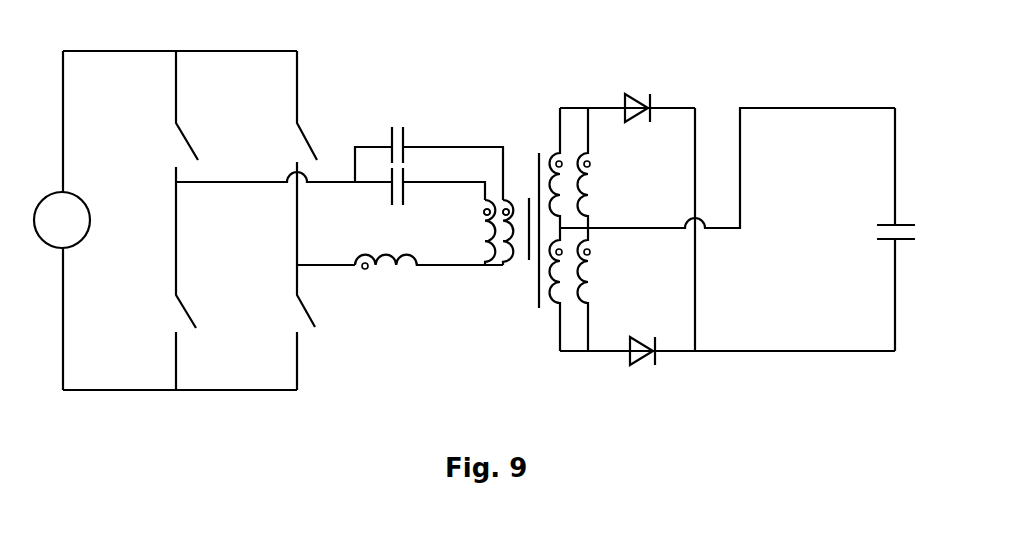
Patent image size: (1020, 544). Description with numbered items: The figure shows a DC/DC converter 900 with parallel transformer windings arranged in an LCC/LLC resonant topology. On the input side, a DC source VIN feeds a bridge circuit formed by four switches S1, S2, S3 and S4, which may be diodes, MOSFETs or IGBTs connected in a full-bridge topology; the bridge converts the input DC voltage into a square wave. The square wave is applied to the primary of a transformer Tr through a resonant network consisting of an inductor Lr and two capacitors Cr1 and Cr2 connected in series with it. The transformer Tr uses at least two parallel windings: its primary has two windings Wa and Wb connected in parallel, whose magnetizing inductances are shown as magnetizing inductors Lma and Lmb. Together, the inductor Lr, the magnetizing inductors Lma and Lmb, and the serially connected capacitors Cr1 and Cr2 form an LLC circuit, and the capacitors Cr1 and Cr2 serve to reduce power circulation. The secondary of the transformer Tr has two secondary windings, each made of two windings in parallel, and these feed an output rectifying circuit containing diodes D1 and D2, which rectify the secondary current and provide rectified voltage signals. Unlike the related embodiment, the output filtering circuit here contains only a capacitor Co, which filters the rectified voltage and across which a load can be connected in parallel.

The DC/DC converter 900 is at (731, 48).
The source VIN is at (62, 220).
The switch S1 is at (195, 125).
The switch S2 is at (311, 140).
The switch S3 is at (193, 295).
The switch S4 is at (311, 310).
The capacitor Cr1 is at (447, 157).
The capacitor Cr2 is at (438, 183).
The inductor Lr is at (429, 252).
The magnetizing inductor Lmb is at (481, 247).
The magnetizing inductor Lma is at (520, 247).
The primary winding Wb is at (483, 213).
The primary winding Wa is at (510, 252).
The transformer Tr is at (559, 229).
The diode D1 is at (627, 122).
The diode D2 is at (727, 339).
The capacitor Co is at (878, 229).